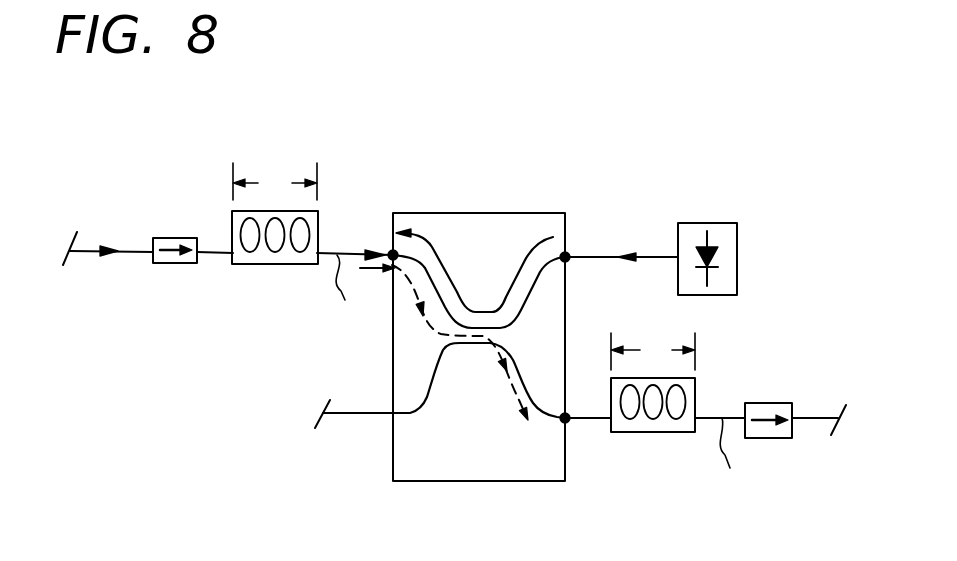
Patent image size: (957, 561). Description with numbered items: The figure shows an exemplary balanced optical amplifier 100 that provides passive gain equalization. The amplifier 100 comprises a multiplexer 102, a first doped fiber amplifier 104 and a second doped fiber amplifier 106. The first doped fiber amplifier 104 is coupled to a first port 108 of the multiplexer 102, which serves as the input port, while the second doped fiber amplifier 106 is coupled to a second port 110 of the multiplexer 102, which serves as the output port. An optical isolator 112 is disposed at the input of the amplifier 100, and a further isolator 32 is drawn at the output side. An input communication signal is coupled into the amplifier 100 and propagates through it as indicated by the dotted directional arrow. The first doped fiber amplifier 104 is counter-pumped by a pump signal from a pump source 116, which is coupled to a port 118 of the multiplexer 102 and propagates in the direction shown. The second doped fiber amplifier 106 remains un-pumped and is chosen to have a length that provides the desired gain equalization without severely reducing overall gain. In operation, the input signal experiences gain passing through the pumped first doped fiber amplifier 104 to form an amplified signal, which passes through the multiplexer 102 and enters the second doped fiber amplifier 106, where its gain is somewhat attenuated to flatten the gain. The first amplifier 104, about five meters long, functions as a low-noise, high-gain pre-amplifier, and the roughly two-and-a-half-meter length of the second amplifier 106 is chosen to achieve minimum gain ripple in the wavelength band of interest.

The balanced optical amplifier 100 is at (140, 157).
The optical isolator 112 is at (175, 238).
The first doped fiber amplifier 104 is at (270, 264).
The first port 108 is at (393, 255).
The multiplexer 102 is at (497, 213).
The port 118 is at (565, 257).
The pump source 116 is at (707, 223).
The output optical isolator 32 is at (770, 403).
The second doped fiber amplifier 106 is at (651, 432).
The second port 110 is at (565, 418).